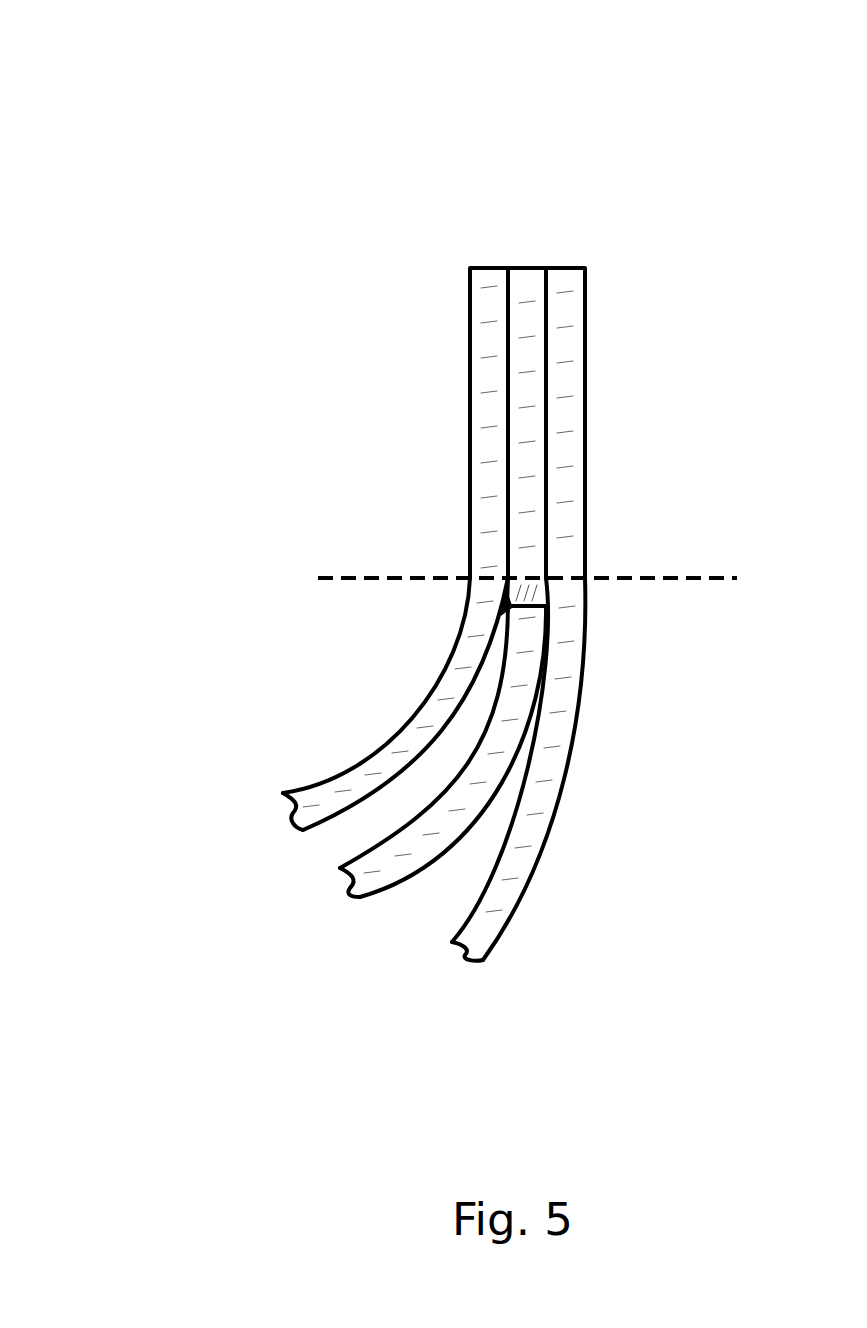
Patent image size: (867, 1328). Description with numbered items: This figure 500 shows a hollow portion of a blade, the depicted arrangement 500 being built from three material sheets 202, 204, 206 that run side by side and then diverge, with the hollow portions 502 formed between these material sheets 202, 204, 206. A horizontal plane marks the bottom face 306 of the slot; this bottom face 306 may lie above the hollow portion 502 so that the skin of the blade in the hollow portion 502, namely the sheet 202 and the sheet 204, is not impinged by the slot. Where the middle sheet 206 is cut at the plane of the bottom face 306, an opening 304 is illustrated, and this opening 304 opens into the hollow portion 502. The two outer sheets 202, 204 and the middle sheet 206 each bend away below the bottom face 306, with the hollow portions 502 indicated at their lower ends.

The catheter assembly with deflected tubes 500 is at (155, 68).
The material sheet 202 is at (488, 268).
The material sheet 204 is at (577, 268).
The material sheet 206 is at (528, 268).
The opening 304 is at (532, 592).
The bottom face 306 is at (405, 576).
The hollow portion 502 is at (350, 840).